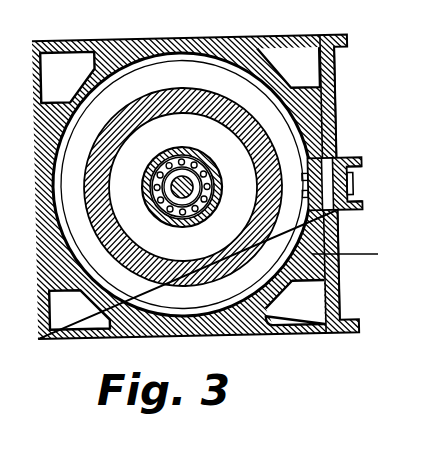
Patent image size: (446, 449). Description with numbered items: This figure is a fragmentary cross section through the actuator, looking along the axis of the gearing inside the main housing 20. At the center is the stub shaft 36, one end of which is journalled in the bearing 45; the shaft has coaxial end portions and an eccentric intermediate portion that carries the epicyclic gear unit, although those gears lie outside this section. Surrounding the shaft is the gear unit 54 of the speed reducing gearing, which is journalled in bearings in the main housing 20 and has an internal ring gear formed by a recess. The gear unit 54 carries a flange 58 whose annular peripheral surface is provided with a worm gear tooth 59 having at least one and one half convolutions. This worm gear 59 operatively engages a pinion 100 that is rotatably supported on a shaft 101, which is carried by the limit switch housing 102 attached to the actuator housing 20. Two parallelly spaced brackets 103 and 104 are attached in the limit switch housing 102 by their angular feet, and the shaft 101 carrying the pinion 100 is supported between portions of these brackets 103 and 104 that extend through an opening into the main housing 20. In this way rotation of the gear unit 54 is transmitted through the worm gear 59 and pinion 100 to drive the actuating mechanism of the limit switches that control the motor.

The main housing 20 is at (268, 47).
The stub shaft 36 is at (202, 161).
The bearing 45 is at (186, 166).
The gear unit 54 is at (194, 98).
The flange 58 is at (42, 210).
The worm gear tooth 59 is at (63, 196).
The pinion 100 is at (325, 181).
The shaft 101 is at (354, 174).
The limit switch housing 102 is at (333, 113).
The bracket 103 is at (362, 203).
The bracket 104 is at (362, 160).